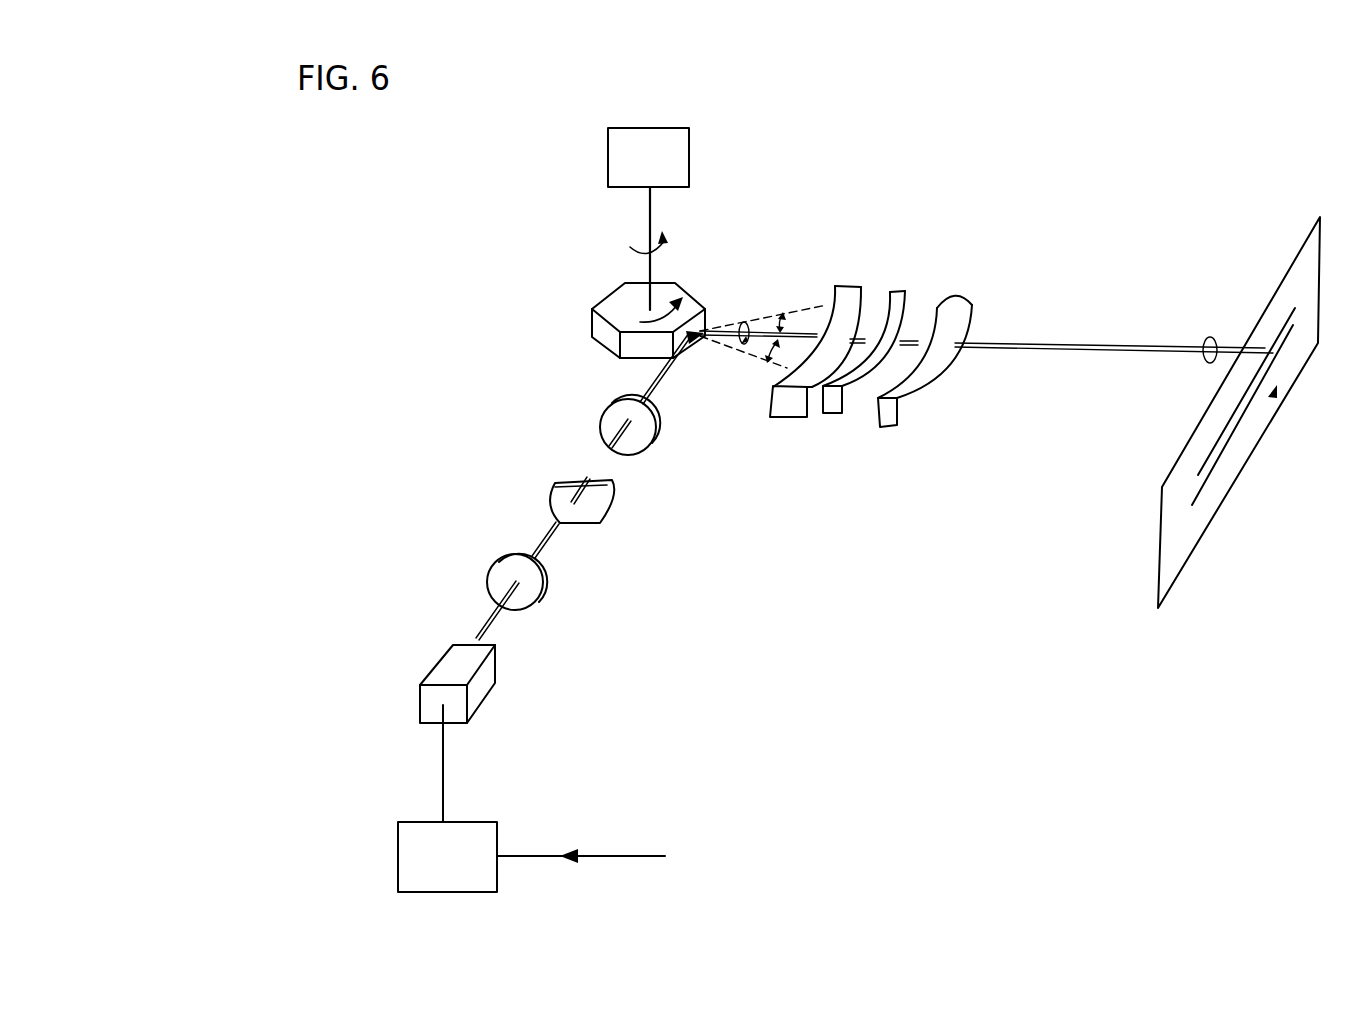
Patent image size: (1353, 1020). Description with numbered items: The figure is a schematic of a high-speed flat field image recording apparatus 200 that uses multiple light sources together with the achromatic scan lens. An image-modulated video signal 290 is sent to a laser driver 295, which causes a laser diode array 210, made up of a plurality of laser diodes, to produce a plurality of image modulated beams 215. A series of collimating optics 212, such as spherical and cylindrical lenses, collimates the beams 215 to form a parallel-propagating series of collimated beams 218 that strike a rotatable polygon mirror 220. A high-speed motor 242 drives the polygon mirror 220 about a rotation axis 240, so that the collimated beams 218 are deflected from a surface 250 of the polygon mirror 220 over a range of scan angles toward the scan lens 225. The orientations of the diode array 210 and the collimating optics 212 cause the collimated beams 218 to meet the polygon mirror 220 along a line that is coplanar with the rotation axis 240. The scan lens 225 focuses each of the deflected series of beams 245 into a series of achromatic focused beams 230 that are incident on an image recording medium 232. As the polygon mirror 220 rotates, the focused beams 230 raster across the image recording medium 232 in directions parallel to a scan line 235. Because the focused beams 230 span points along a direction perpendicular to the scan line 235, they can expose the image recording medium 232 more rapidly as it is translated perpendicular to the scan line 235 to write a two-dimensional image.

The recording apparatus 200 is at (952, 130).
The laser diode array 210 is at (483, 688).
The collimating optics 212 is at (613, 383).
The image modulated beams 215 is at (503, 622).
The collimated beams 218 is at (668, 368).
The rotatable polygon mirror 220 is at (615, 305).
The scan lens 225 is at (972, 270).
The focused beams 230 is at (1212, 340).
The image recording medium 232 is at (1295, 278).
The scan line 235 is at (1198, 490).
The rotation axis 240 is at (652, 206).
The high-speed motor 242 is at (608, 160).
The deflected series of beams 245 is at (758, 318).
The surface of polygon mirror 250 is at (693, 310).
The video signal 290 is at (732, 847).
The laser driver 295 is at (497, 870).